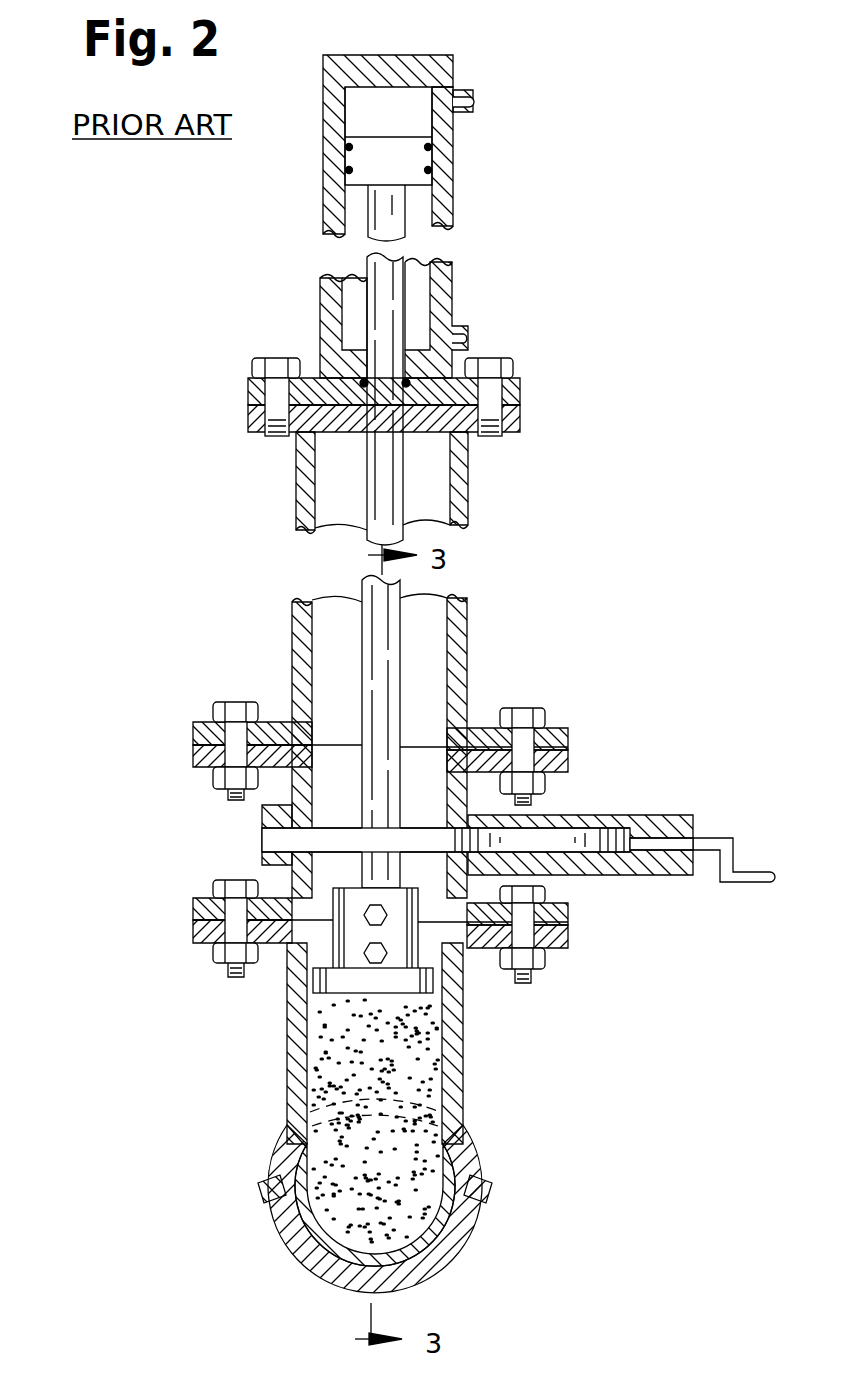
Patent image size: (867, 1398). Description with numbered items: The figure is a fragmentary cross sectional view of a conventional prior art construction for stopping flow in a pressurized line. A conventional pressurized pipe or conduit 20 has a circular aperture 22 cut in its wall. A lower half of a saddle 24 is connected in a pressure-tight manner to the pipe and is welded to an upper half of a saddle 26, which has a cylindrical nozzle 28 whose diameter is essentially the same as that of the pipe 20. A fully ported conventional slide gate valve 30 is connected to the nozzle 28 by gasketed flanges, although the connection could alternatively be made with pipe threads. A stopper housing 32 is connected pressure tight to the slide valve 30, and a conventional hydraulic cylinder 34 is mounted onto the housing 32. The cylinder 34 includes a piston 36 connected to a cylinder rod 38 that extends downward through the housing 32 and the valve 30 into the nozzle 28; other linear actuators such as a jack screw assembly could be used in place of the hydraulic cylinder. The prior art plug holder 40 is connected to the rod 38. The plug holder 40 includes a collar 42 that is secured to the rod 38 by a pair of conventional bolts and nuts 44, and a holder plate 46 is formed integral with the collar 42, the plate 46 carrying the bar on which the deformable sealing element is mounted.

The pressurized pipe 20 is at (445, 1228).
The circular aperture 22 is at (292, 1101).
The lower half of saddle 24 is at (284, 1232).
The upper half of saddle 26 is at (283, 1150).
The cylindrical nozzle 28 is at (455, 1076).
The slide gate valve 30 is at (609, 806).
The stopper housing 32 is at (452, 636).
The hydraulic cylinder 34 is at (458, 293).
The piston 36 is at (390, 178).
The cylinder rod 38 is at (365, 330).
The plug holder 40 is at (322, 895).
The collar 42 is at (333, 948).
The bolts and nuts 44 is at (372, 958).
The holder plate 46 is at (425, 993).